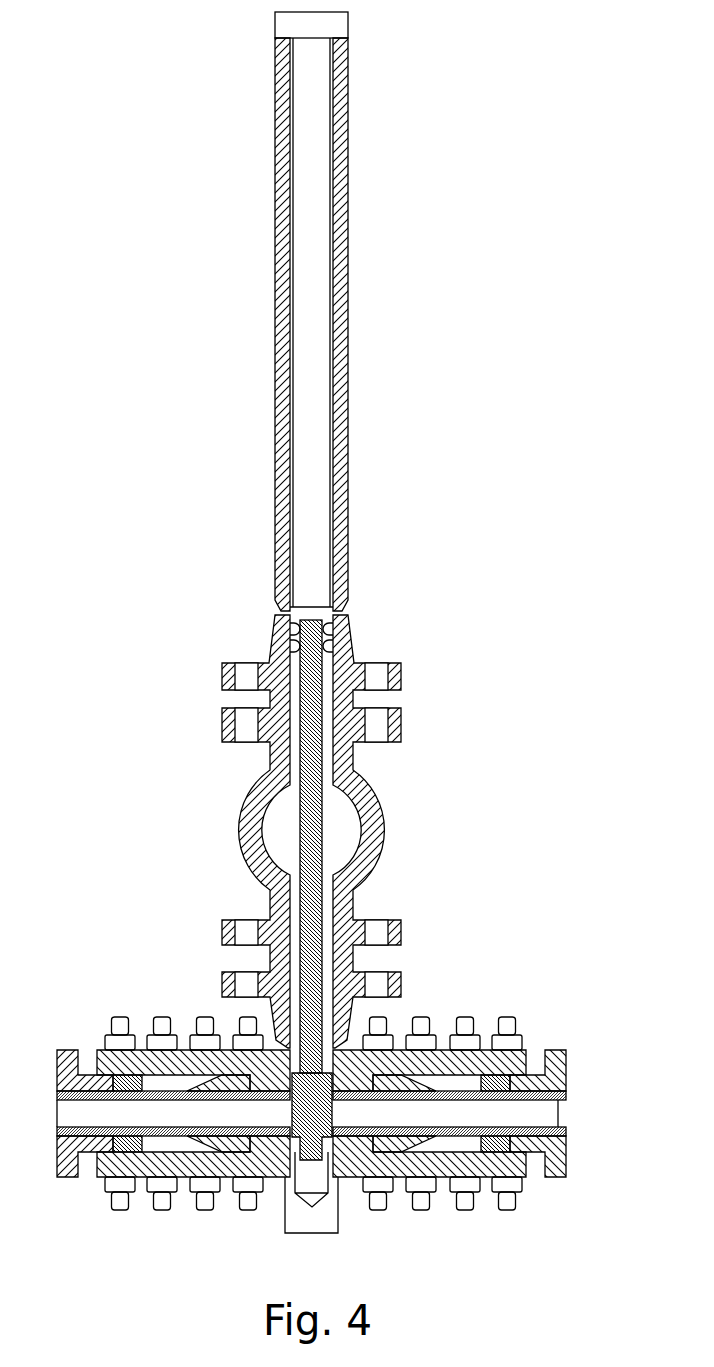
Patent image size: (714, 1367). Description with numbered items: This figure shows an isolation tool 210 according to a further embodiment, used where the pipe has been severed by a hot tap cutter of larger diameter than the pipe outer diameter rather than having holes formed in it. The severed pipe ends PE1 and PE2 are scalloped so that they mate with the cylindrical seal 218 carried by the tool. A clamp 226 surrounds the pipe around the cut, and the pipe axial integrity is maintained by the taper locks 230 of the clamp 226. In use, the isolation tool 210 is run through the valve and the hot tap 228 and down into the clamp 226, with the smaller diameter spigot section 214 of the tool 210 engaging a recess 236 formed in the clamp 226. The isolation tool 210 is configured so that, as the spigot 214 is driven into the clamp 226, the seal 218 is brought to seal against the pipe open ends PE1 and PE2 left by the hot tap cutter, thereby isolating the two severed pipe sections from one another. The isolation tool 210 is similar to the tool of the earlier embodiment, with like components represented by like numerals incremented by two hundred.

The isolation tool 210 is at (313, 887).
The spigot section 214 is at (303, 952).
The cylindrical seal 218 is at (311, 1114).
The clamp 226 is at (542, 1025).
The hot tap 228 is at (378, 979).
The taper locks 230 is at (235, 1082).
The recess 236 is at (306, 1208).
The pipe end PE1 is at (368, 1135).
The pipe end PE2 is at (291, 1113).